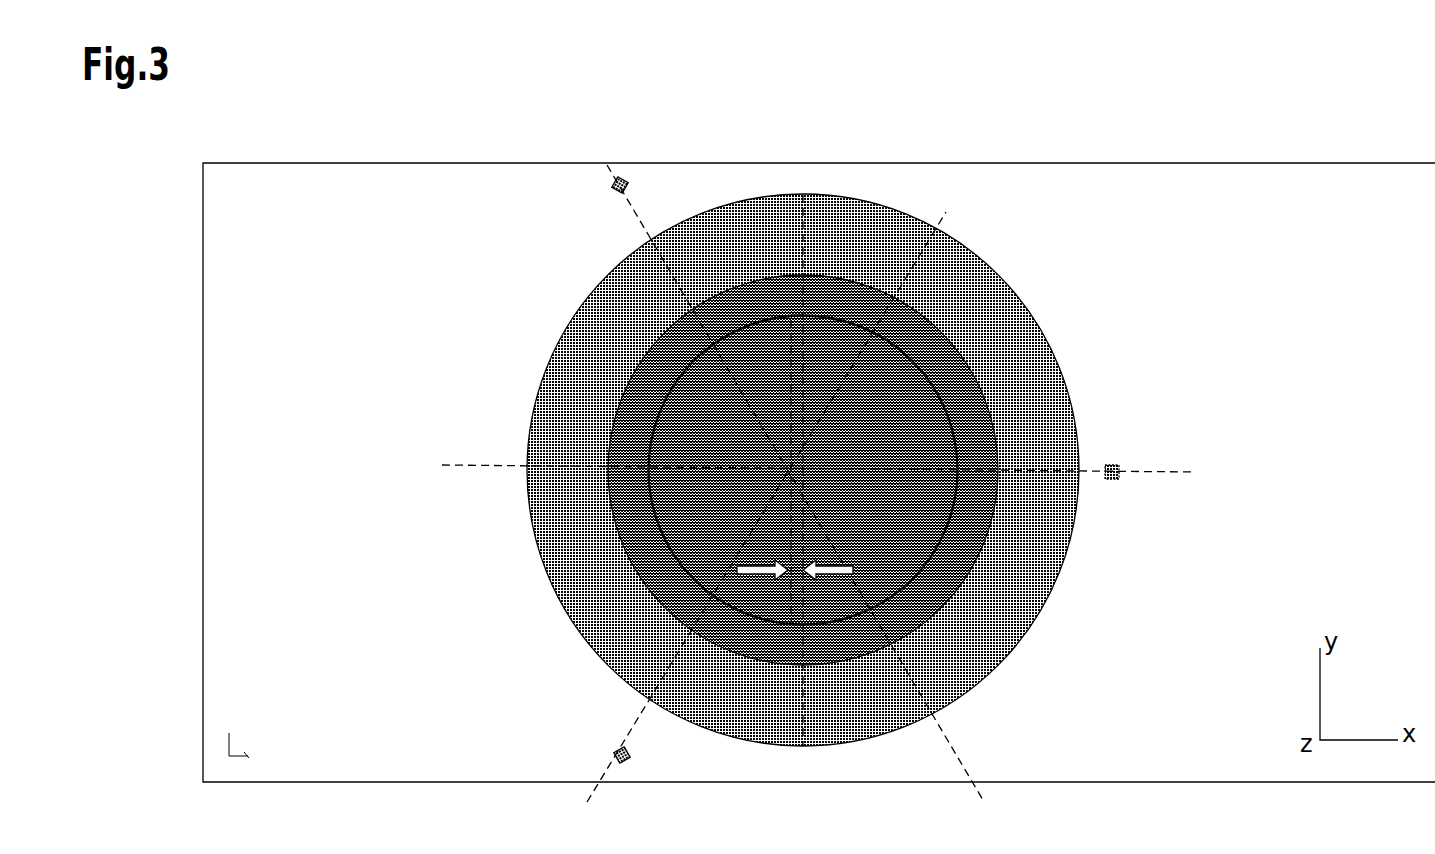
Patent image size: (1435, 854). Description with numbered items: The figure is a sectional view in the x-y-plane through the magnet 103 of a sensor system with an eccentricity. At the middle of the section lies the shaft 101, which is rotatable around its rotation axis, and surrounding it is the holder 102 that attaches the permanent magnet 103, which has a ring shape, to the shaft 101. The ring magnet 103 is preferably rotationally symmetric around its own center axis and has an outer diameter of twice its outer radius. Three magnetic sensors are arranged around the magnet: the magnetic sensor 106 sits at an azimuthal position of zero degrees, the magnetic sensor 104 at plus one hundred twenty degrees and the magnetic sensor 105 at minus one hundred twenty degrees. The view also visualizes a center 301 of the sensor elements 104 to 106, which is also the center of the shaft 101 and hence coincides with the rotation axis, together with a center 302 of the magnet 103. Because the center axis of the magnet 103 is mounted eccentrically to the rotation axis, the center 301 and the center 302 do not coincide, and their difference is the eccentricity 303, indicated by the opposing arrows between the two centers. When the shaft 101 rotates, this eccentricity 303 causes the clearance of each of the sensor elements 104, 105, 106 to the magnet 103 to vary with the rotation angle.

The shaft 101 is at (712, 535).
The holder 102 is at (968, 528).
The permanent magnet 103 is at (975, 312).
The magnetic sensor 104 is at (773, 482).
The magnetic sensor 105 is at (755, 507).
The magnetic sensor 106 is at (1112, 490).
The center of the sensor elements 301 is at (778, 467).
The center of the magnet 302 is at (815, 460).
The eccentricity 303 is at (846, 563).